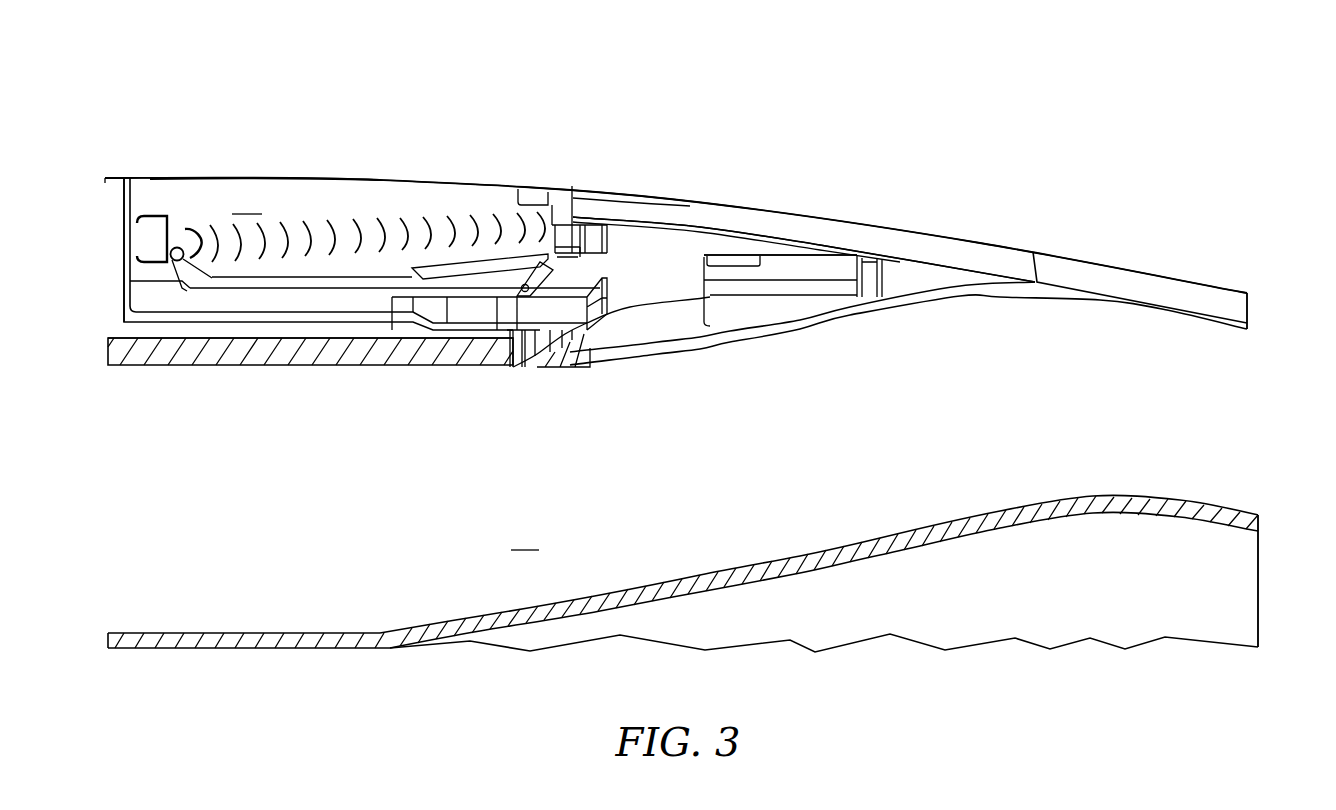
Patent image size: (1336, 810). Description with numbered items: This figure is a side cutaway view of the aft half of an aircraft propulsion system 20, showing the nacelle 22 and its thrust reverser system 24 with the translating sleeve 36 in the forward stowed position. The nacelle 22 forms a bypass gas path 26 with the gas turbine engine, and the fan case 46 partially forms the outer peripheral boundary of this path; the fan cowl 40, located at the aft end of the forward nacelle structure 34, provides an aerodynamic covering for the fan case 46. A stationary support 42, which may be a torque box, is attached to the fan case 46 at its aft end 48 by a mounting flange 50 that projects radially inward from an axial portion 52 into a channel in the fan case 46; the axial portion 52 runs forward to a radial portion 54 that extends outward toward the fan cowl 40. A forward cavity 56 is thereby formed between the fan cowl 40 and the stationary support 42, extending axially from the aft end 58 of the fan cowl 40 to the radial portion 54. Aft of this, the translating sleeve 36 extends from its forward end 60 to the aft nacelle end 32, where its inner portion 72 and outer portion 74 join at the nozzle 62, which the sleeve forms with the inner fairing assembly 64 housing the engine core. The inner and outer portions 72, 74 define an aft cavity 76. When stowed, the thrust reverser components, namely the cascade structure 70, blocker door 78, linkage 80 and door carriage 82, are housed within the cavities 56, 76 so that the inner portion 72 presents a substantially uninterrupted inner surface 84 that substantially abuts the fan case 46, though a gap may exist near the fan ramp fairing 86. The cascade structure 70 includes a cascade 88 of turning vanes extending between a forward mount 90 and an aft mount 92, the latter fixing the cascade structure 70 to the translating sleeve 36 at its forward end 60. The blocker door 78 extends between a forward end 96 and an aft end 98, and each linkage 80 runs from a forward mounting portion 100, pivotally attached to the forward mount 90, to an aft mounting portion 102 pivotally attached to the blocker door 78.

The aircraft propulsion system 20 is at (905, 103).
The nacelle 22 is at (152, 148).
The thrust reverser system 24 is at (654, 181).
The bypass gas path 26 is at (683, 583).
The aft nacelle end 32 is at (1250, 295).
The forward nacelle structure 34 is at (278, 179).
The translating sleeve 36 is at (913, 224).
The fan cowl 40 is at (382, 178).
The stationary support 42 is at (125, 254).
The fan case 46 is at (108, 345).
The aft end of the fan case 48 is at (523, 368).
The mounting flange 50 is at (508, 332).
The axial portion 52 is at (297, 316).
The radial portion 54 is at (124, 222).
The forward cavity 56 is at (247, 202).
The aft end of the fan cowl 58 is at (574, 200).
The forward end of the translating sleeve 60 is at (553, 225).
The nozzle 62 is at (1226, 420).
The inner fairing assembly 64 is at (1232, 504).
The cascade structure 70 is at (427, 216).
The inner portion 72 is at (722, 342).
The outer portion 74 is at (787, 210).
The aft cavity 76 is at (648, 292).
The blocker door 78 is at (445, 274).
The linkage 80 is at (233, 285).
The door carriage 82 is at (810, 288).
The inner surface 84 is at (910, 304).
The fan ramp fairing 86 is at (550, 368).
The cascade 88 is at (333, 237).
The forward mount 90 is at (162, 215).
The aft mount 92 is at (547, 222).
The forward end of the blocker door 96 is at (403, 270).
The aft end of the blocker door 98 is at (708, 257).
The forward mounting portion 100 is at (192, 280).
The aft mounting portion 102 is at (500, 298).